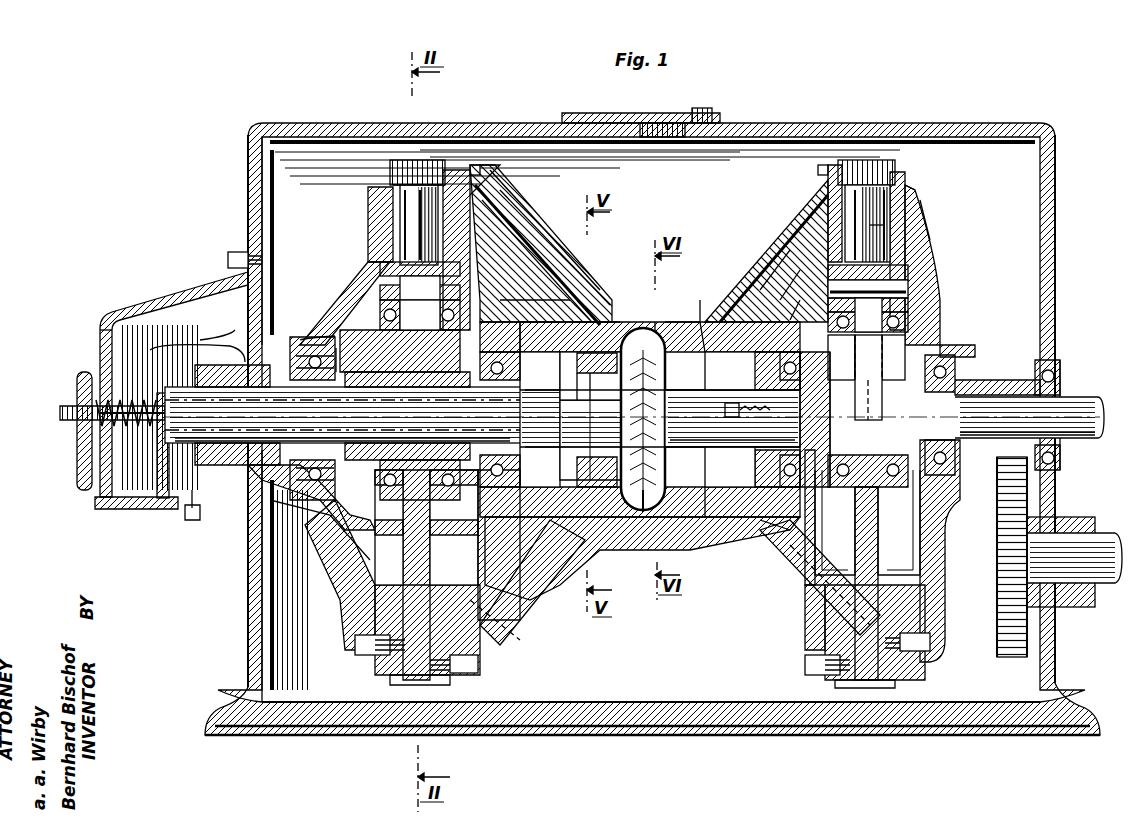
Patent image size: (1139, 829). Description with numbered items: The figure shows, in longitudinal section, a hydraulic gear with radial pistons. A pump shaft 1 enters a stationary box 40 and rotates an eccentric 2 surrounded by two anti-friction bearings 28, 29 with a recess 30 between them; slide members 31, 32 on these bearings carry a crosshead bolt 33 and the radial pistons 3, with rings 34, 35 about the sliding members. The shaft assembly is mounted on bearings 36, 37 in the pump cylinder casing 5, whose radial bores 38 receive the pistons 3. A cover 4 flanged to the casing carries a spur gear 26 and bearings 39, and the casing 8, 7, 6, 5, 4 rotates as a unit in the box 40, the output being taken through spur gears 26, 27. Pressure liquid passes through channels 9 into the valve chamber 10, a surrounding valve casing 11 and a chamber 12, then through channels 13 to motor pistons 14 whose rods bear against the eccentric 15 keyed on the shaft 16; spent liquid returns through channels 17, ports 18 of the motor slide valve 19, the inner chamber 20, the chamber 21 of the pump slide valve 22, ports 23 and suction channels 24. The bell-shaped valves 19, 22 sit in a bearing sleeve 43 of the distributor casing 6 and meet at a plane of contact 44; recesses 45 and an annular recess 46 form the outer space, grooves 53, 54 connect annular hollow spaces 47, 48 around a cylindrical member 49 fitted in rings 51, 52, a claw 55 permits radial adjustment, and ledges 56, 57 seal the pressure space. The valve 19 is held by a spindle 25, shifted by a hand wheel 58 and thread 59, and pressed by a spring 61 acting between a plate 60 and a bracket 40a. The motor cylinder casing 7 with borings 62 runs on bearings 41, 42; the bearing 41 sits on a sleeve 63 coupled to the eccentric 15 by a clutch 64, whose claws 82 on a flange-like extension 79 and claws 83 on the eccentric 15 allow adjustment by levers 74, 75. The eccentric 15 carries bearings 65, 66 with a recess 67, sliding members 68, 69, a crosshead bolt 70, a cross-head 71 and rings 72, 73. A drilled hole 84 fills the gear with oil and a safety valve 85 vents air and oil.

The pump shaft 1 is at (1050, 412).
The eccentric 2 is at (885, 350).
The radial pistons 3 is at (890, 230).
The cover 4 is at (920, 205).
The pump cylinder casing 5 is at (912, 198).
The distributor casing 6 is at (475, 180).
The motor cylinder casing 7 is at (392, 170).
The casing 8 is at (366, 194).
The channels 9 is at (815, 195).
The valve chamber 10 is at (680, 320).
The valve casing 11 is at (650, 340).
The chamber 12 is at (640, 322).
The channels 13 is at (520, 240).
The motor pistons 14 is at (480, 190).
The eccentric 15 is at (340, 320).
The shaft 16 is at (320, 345).
The channels 17 is at (492, 645).
The ports 18 is at (582, 550).
The motor slide valve 19 is at (542, 419).
The inner chamber 20 is at (660, 300).
The chamber 21 is at (700, 405).
The pump slide valve 22 is at (703, 322).
The ports 23 is at (690, 390).
The suction channels 24 is at (790, 560).
The spindle 25 is at (170, 335).
The spur gear 26 is at (1030, 370).
The spur gear 27 is at (995, 634).
The anti-friction bearing 28 is at (880, 342).
The anti-friction bearing 29 is at (900, 312).
The recess 30 is at (960, 350).
The slide member 31 is at (895, 282).
The slide member 32 is at (850, 280).
The crosshead bolt 33 is at (897, 300).
The ring 34 is at (910, 540).
The ring 35 is at (880, 555).
The bearing 36 is at (960, 380).
The bearing 37 is at (790, 320).
The radial bores 38 is at (890, 185).
The anti-friction bearings 39 is at (1058, 360).
The box 40 is at (1052, 238).
The bracket 40a is at (160, 300).
The anti-friction bearing 41 is at (320, 495).
The anti-friction bearing 42 is at (500, 625).
The bearing sleeve 43 is at (800, 540).
The plane of contact 44 is at (560, 415).
The recesses 45 is at (595, 376).
The annular recess 46 is at (640, 520).
The annular hollow space 47 is at (760, 290).
The annular hollow space 48 is at (600, 322).
The cylindrical member 49 is at (760, 530).
The ring 51 is at (780, 300).
The ring 52 is at (560, 320).
The groove 53 is at (730, 390).
The groove 54 is at (598, 322).
The claw 55 is at (770, 412).
The projecting ledge 56 is at (600, 517).
The projecting ledge 57 is at (585, 520).
The hand wheel 58 is at (75, 370).
The thread 59 is at (60, 412).
The plate 60 is at (160, 445).
The spring 61 is at (156, 355).
The cylindrical borings 62 is at (395, 180).
The sleeve 63 is at (200, 520).
The clutch 64 is at (300, 515).
The bearing 65 is at (382, 268).
The bearing 66 is at (540, 225).
The recess 67 is at (415, 365).
The sliding member 68 is at (400, 300).
The sliding member 69 is at (485, 175).
The crosshead bolt 70 is at (385, 290).
The cross-head 71 is at (515, 200).
The ring 72 is at (380, 530).
The ring 73 is at (445, 530).
The lever 74 is at (225, 333).
The lever 75 is at (170, 515).
The flange-like extension 79 is at (332, 520).
The claws 82 is at (234, 276).
The claws 83 is at (360, 330).
The drilled hole 84 is at (260, 470).
The safety valve 85 is at (700, 517).